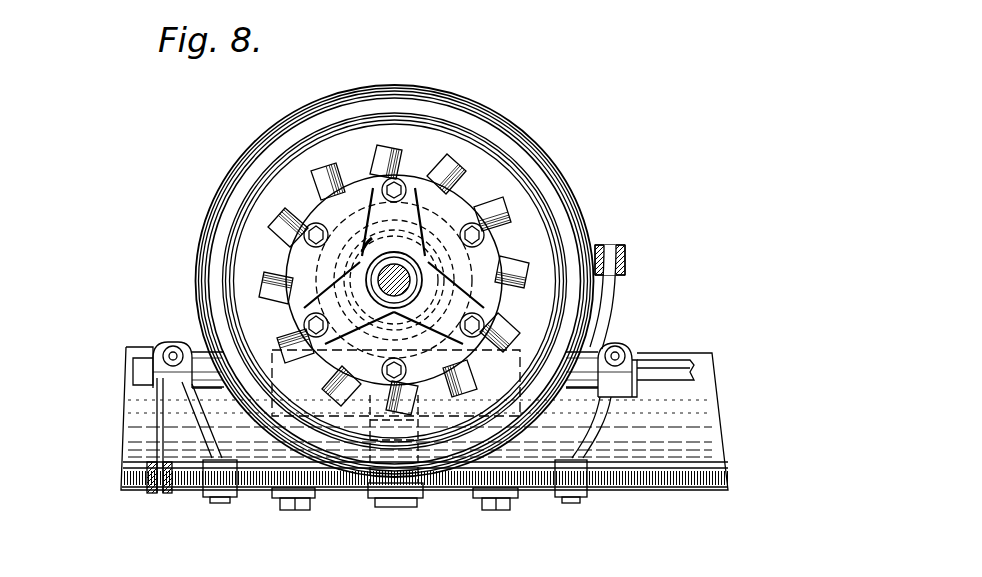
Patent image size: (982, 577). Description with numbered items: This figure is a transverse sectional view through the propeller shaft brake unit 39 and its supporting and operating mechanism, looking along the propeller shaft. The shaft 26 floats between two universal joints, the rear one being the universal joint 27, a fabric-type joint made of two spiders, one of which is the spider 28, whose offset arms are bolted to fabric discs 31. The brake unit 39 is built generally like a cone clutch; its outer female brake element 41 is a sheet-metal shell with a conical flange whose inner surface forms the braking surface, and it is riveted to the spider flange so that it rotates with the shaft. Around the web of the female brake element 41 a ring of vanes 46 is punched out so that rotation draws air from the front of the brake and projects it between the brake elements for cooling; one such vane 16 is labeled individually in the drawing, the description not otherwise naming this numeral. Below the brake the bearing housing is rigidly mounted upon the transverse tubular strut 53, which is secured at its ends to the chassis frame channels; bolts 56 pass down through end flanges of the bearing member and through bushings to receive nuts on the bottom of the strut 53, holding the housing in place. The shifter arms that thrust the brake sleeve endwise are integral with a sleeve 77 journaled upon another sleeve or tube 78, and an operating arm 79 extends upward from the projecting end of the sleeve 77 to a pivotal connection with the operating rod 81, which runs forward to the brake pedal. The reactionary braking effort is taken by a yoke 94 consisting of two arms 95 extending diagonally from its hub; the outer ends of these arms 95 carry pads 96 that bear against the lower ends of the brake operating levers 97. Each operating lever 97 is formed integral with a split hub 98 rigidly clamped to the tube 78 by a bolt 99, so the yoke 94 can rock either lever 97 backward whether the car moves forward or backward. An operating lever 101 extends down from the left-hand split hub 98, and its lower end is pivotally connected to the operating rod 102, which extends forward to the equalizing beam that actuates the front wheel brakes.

The blade 16 is at (522, 282).
The shaft 26 is at (400, 264).
The universal joint 27 is at (300, 249).
The spider 28 is at (350, 277).
The fabric discs 31 is at (512, 313).
The propeller shaft brake unit 39 is at (395, 272).
The outer female brake element 41 is at (453, 107).
The vanes 46 is at (427, 280).
The tubular strut 53 is at (669, 457).
The bolts 56 is at (297, 505).
The sleeve 77 is at (578, 387).
The sleeve or tube 78 is at (142, 373).
The operating arm 79 is at (603, 307).
The operating rod 81 is at (625, 264).
The yoke 94 is at (440, 490).
The arms 95 is at (258, 480).
The pads 96 is at (207, 492).
The brake operating levers 97 is at (208, 442).
The split hub 98 is at (165, 390).
The bolt 99 is at (173, 346).
The operating lever 101 is at (157, 415).
The operating rod 102 is at (125, 480).